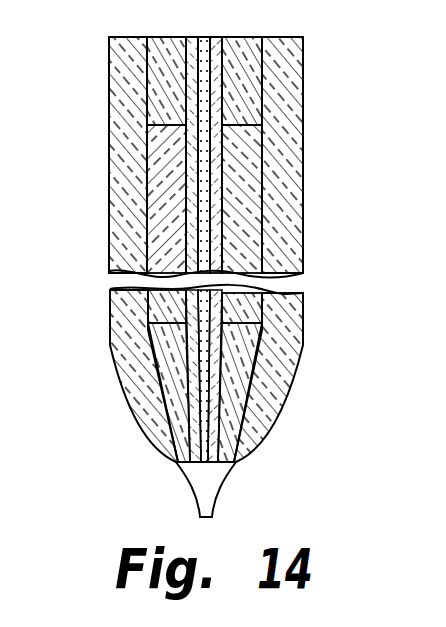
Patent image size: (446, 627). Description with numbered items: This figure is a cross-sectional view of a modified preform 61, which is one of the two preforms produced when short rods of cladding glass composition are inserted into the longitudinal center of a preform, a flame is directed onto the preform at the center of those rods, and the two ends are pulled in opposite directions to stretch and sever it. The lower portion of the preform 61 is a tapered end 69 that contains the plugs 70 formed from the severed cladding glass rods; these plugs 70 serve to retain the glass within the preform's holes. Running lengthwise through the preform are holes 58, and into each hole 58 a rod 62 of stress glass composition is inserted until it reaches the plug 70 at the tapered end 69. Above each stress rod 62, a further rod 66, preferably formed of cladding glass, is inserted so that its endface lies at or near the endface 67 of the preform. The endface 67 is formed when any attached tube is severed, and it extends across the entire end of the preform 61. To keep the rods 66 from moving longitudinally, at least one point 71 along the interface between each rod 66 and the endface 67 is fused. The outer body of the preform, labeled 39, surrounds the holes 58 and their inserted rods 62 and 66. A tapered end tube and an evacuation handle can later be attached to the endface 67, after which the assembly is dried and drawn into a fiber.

The fused point 71 is at (263, 33).
The endface 67 is at (282, 36).
The rods of cladding glass 66 is at (150, 64).
The rods of stress glass composition 62 is at (153, 165).
The holes 58 is at (158, 213).
The outer housing wall 39 is at (303, 257).
The modified preform 61 is at (252, 400).
The tapered end 69 is at (274, 399).
The plugs 70 is at (177, 418).